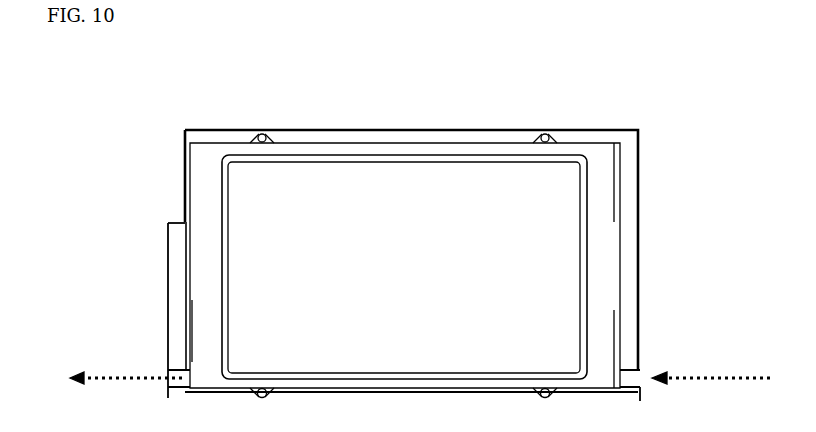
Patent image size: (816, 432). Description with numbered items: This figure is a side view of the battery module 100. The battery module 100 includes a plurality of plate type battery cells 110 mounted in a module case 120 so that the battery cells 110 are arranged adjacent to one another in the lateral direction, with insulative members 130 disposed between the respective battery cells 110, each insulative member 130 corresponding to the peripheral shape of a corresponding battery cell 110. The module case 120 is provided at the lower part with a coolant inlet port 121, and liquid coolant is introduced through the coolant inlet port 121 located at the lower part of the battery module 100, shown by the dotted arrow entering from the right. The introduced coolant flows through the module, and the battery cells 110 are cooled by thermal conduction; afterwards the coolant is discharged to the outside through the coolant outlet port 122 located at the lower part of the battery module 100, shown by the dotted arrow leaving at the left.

The battery module 100 is at (121, 85).
The battery cell 110 is at (243, 217).
The module case 120 is at (640, 199).
The coolant inlet port 121 is at (644, 378).
The coolant outlet port 122 is at (167, 369).
The insulative member 130 is at (600, 275).